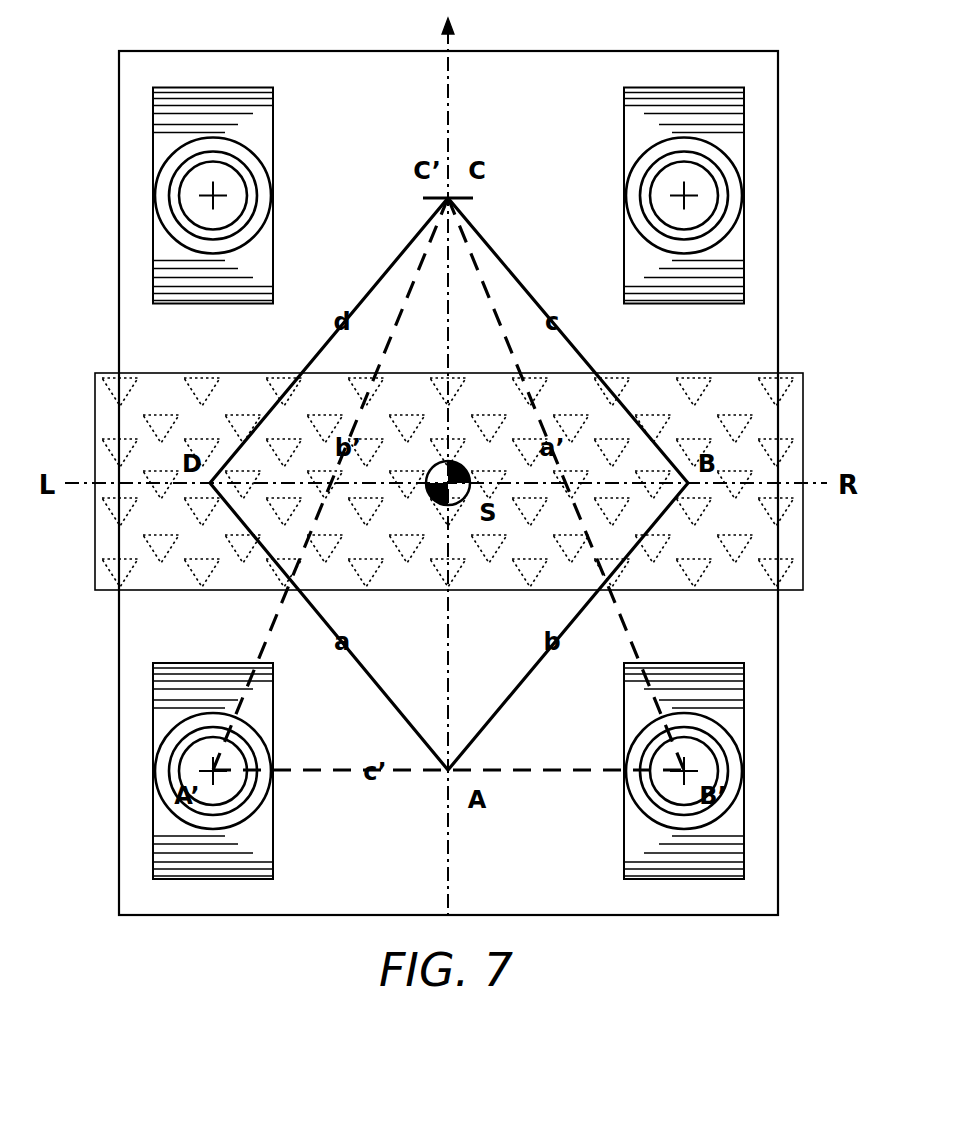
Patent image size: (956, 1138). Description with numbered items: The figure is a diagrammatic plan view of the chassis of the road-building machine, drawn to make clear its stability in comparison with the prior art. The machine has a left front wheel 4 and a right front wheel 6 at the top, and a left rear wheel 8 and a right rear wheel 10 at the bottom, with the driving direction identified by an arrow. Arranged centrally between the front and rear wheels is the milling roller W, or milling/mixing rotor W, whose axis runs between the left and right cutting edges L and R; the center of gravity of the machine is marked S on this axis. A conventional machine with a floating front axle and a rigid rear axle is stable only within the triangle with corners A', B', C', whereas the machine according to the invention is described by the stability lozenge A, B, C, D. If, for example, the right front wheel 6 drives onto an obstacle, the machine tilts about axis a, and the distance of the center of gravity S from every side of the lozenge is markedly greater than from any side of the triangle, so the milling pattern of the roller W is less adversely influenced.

The left front wheel 4 is at (294, 174).
The right front wheel 6 is at (600, 168).
The left rear wheel 8 is at (294, 828).
The right rear wheel 10 is at (603, 826).
The milling roller W is at (697, 373).